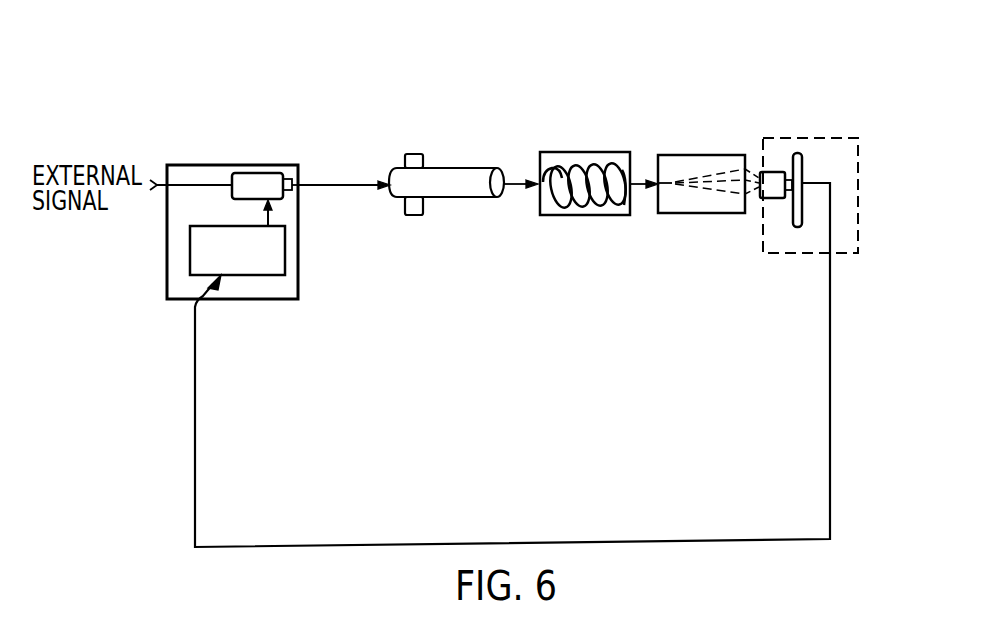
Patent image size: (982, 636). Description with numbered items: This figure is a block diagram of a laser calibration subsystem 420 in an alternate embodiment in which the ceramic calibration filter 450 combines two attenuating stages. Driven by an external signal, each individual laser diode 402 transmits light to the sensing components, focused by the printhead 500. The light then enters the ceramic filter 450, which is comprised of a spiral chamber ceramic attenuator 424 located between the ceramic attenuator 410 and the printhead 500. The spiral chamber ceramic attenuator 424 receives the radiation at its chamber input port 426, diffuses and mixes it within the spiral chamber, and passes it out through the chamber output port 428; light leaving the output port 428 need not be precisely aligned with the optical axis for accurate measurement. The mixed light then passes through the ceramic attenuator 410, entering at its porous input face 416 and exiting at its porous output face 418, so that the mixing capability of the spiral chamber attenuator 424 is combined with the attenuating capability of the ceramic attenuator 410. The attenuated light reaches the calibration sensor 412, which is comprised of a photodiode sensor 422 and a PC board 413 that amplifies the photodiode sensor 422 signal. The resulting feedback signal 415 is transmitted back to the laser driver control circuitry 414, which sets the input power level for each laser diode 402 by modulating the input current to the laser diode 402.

The laser calibration subsystem 420 is at (360, 72).
The laser diode 402 is at (251, 173).
The laser driver control circuitry 414 is at (285, 250).
The feedback signal 415 is at (195, 443).
The printhead 500 is at (472, 167).
The spiral chamber ceramic attenuator 424 is at (568, 215).
The chamber input port 426 is at (541, 164).
The chamber output port 428 is at (634, 205).
The ceramic attenuator 410 is at (680, 213).
The input face 416 is at (657, 163).
The output face 418 is at (748, 215).
The ceramic filter 450 is at (753, 292).
The calibration sensor 412 is at (827, 137).
The photodiode sensor 422 is at (770, 170).
The PC board 413 is at (807, 217).